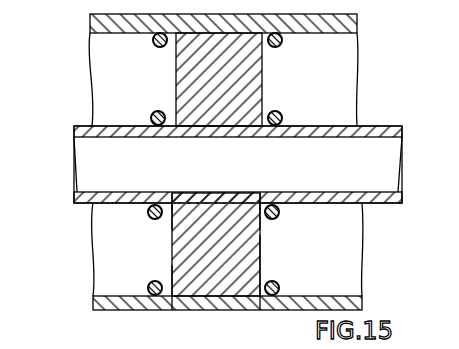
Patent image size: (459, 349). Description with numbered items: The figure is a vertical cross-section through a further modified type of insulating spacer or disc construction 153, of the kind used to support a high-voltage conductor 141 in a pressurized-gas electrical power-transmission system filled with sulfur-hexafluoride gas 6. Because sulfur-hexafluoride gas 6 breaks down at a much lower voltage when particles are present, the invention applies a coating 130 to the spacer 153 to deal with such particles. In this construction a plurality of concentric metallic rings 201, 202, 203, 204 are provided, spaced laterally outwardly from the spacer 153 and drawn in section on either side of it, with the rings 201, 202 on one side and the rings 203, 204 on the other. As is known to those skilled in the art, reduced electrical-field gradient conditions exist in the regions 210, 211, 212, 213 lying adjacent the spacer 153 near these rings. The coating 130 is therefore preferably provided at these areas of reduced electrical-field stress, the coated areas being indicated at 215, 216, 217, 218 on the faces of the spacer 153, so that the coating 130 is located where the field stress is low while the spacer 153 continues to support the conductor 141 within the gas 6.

The sulfur-hexafluoride gas 6 is at (127, 46).
The high-voltage conductor 141 is at (116, 125).
The coating 130 is at (262, 202).
The region of reduced electrical-field gradient 212 is at (171, 199).
The region of reduced electrical-field gradient 213 is at (264, 199).
The concentric metallic ring 202 is at (149, 214).
The concentric metallic ring 204 is at (281, 209).
The concentric metallic ring 201 is at (147, 288).
The concentric metallic ring 203 is at (280, 285).
The coated area of reduced electrical field stress 216 is at (167, 217).
The coated area of reduced electrical field stress 217 is at (267, 212).
The spacer 153 is at (261, 251).
The coated area of reduced electrical field stress 215 is at (168, 290).
The coated area of reduced electrical field stress 218 is at (278, 265).
The region of reduced electrical-field gradient 210 is at (174, 302).
The region of reduced electrical-field gradient 211 is at (258, 300).